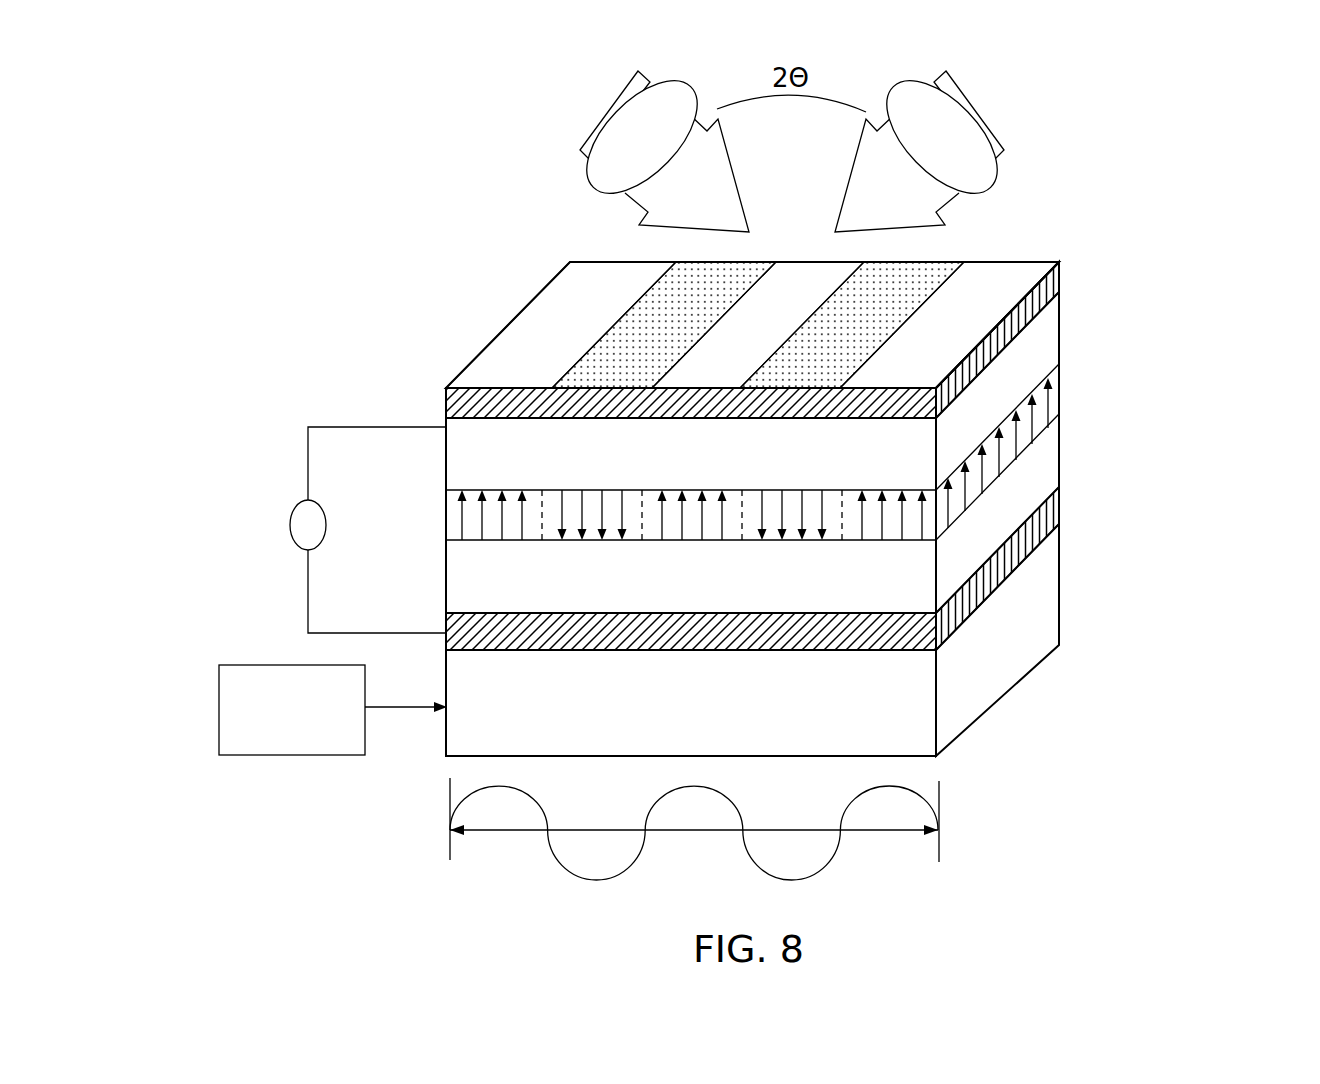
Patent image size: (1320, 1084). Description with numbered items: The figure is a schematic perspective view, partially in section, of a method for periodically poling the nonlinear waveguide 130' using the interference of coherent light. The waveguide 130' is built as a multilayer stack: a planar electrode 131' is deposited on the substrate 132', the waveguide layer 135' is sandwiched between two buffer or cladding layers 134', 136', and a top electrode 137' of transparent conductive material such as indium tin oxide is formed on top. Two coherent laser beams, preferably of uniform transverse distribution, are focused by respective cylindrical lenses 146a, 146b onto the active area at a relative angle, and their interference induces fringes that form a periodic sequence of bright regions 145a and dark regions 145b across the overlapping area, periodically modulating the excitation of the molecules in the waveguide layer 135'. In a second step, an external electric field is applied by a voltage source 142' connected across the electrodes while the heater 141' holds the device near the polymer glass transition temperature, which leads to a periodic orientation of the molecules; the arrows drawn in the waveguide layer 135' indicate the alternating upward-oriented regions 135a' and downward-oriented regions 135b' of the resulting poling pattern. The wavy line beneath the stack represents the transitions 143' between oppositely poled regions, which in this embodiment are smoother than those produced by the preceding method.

The nonlinear waveguide 130' is at (869, 450).
The planar electrode 131' is at (851, 563).
The substrate 132' is at (838, 640).
The buffer or cladding layer 134' is at (841, 524).
The waveguide layer 135' is at (717, 370).
The upward-oriented molecular regions of waveguide layer 135a' is at (567, 434).
The downward-oriented molecular regions of waveguide layer 135b' is at (599, 370).
The buffer or cladding layer 136' is at (840, 391).
The top electrode 137' is at (840, 326).
The heater 141' is at (309, 663).
The voltage source 142' is at (319, 530).
The transitions 143' is at (697, 853).
The bright regions 145a is at (668, 332).
The dark regions 145b is at (518, 362).
The cylindrical lens 146a is at (605, 183).
The cylindrical lens 146b is at (980, 186).